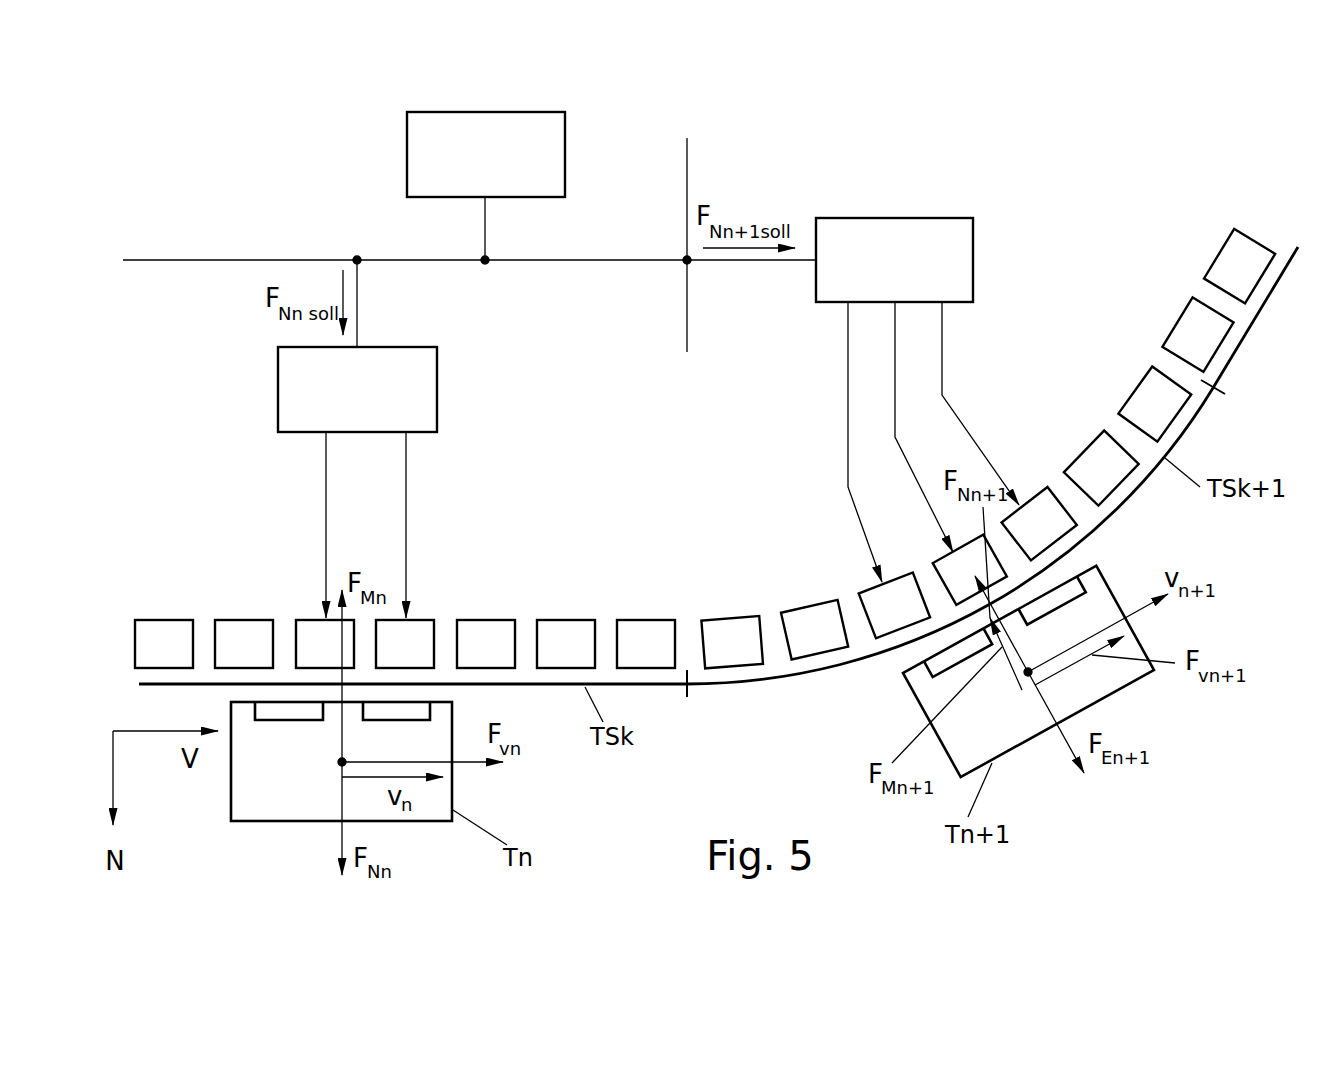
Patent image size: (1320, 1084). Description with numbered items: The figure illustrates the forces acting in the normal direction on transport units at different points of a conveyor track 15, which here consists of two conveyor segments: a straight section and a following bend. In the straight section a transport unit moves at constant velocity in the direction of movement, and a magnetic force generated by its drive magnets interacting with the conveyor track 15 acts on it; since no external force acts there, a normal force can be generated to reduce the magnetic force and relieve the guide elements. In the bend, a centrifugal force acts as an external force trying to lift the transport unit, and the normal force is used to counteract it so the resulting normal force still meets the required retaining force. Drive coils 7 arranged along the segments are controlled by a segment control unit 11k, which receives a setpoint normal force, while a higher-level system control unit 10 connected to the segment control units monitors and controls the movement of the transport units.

The system control unit 10 is at (458, 167).
The segment control unit 11k is at (330, 398).
The drive coils 7 is at (323, 643).
The conveyor track 15 is at (1248, 333).